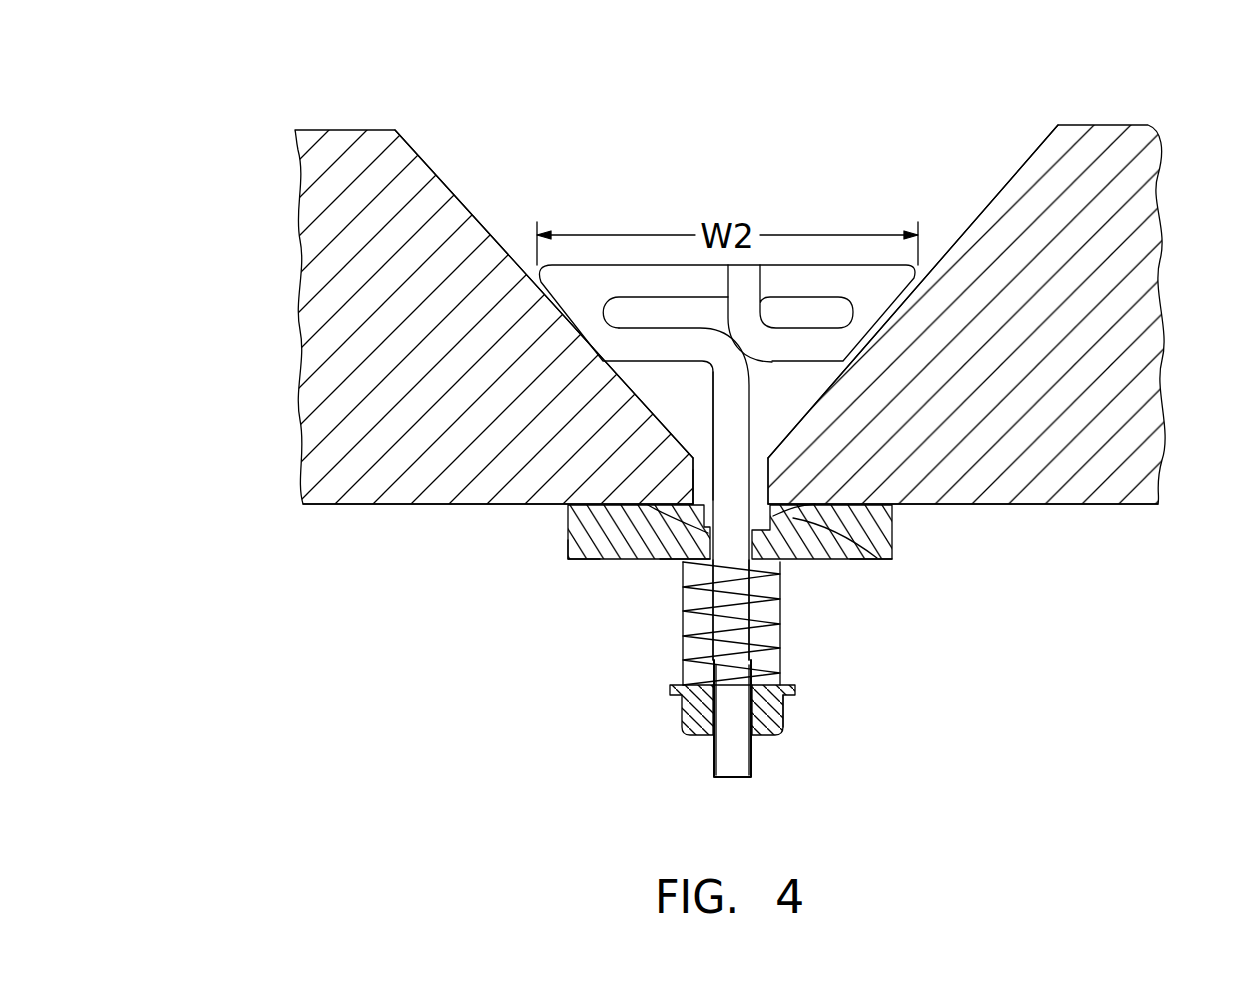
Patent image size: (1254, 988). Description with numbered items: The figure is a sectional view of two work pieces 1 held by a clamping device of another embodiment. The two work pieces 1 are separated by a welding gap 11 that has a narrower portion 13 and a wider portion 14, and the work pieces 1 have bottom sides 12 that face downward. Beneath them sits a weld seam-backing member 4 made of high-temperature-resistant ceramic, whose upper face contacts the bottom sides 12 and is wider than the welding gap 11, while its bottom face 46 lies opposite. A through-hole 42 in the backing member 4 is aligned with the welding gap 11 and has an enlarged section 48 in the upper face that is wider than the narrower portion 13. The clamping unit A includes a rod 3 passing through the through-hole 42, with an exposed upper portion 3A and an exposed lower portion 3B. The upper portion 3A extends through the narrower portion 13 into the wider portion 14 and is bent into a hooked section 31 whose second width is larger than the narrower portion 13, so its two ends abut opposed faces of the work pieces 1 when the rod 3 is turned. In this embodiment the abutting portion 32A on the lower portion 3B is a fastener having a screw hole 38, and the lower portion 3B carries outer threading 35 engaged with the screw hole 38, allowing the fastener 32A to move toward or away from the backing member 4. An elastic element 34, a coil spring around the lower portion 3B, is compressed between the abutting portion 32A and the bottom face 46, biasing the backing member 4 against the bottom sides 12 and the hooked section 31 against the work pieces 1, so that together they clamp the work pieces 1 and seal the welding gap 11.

The work pieces 1 is at (1117, 270).
The wider portion 14 is at (970, 160).
The narrower portion 13 is at (762, 478).
The bottom sides 12 is at (1068, 506).
The rod 3 is at (757, 422).
The upper portion 3A is at (700, 403).
The lower portion 3B is at (757, 610).
The hooked section 31 is at (873, 308).
The weld seam-backing member 4 is at (892, 536).
The welding gap 11 is at (702, 480).
The bottom face 46 is at (593, 562).
The through-hole 42 is at (712, 548).
The enlarged section 48 is at (885, 565).
The clamping unit A is at (807, 652).
The elastic element 34 is at (683, 658).
The abutting portion 32A is at (785, 712).
The outer threading 35 is at (713, 753).
The screw hole 38 is at (741, 717).